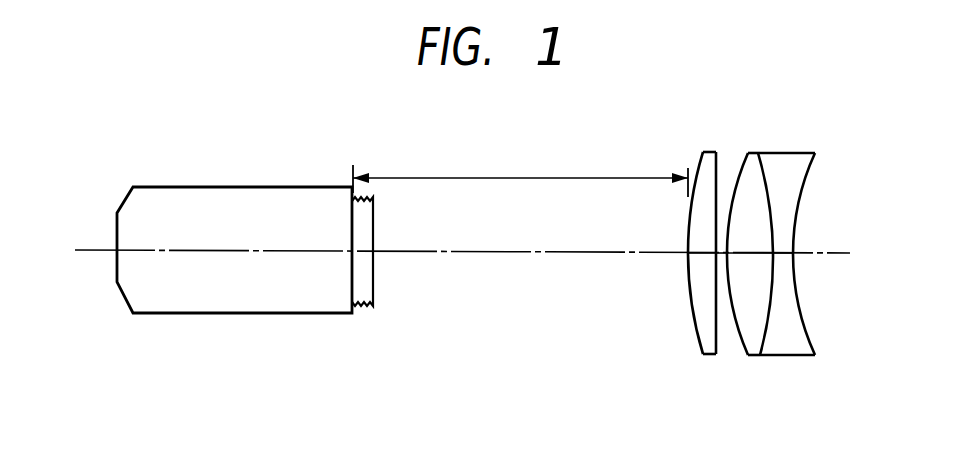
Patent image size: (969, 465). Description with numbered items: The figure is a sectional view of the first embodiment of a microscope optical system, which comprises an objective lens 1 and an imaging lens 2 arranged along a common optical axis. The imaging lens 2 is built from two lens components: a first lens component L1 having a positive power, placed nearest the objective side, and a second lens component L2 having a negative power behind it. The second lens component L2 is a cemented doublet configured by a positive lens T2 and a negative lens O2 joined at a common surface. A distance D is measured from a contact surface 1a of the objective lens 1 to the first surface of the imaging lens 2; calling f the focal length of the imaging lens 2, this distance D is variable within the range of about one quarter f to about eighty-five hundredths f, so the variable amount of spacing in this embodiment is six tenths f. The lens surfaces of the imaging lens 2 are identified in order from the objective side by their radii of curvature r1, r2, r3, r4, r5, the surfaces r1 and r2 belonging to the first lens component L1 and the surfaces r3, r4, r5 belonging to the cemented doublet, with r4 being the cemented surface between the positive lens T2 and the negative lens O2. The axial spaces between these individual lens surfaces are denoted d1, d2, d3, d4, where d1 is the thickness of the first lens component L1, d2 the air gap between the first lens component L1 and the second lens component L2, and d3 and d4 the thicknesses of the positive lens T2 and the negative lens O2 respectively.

The objective lens 1 is at (228, 296).
The contact surface 1a is at (353, 313).
The imaging lens 2 is at (693, 310).
The distance D is at (520, 174).
The first lens component L1 is at (696, 299).
The second lens component L2 is at (791, 264).
The positive lens T2 is at (771, 264).
The negative lens O2 is at (807, 264).
The radius of curvature r1 is at (700, 345).
The radius of curvature r2 is at (718, 345).
The radius of curvature r3 is at (739, 341).
The radius of curvature r4 is at (765, 338).
The radius of curvature r5 is at (808, 331).
The space between lens surfaces d1 is at (702, 254).
The space between lens surfaces d2 is at (723, 253).
The space between lens surfaces d3 is at (752, 254).
The space between lens surfaces d4 is at (782, 254).